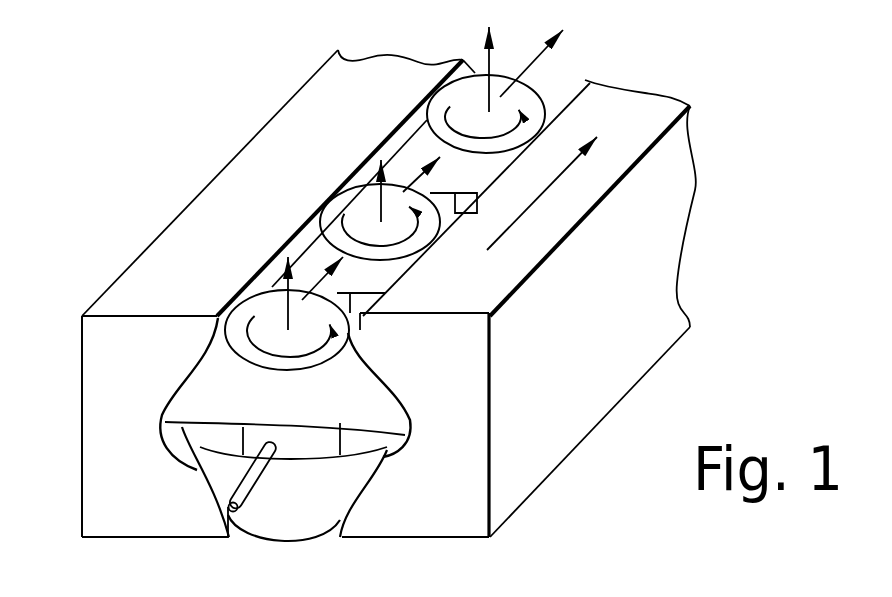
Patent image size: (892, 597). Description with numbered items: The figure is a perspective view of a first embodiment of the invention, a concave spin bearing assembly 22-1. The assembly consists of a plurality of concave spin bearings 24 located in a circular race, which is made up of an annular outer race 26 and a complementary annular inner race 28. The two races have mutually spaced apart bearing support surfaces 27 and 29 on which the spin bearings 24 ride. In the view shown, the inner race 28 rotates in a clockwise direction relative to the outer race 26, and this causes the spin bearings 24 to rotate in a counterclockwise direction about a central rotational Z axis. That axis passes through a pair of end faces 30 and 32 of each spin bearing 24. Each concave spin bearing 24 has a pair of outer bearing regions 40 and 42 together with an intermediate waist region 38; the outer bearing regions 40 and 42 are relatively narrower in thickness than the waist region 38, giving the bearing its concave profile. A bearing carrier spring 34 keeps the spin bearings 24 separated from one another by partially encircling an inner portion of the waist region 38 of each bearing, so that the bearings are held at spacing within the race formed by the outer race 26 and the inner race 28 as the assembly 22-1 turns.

The spin bearing assembly 22-1 is at (208, 107).
The concave spin bearings 24 is at (433, 104).
The annular outer race 26 is at (87, 333).
The bearing support surface 27 is at (157, 397).
The annular inner race 28 is at (680, 207).
The bearing support surface 29 is at (387, 367).
The end face 30 is at (530, 97).
The end face 32 is at (290, 545).
The bearing carrier spring 34 is at (230, 513).
The waist region 38 is at (373, 430).
The outer bearing region 40 is at (217, 373).
The outer bearing region 42 is at (200, 463).